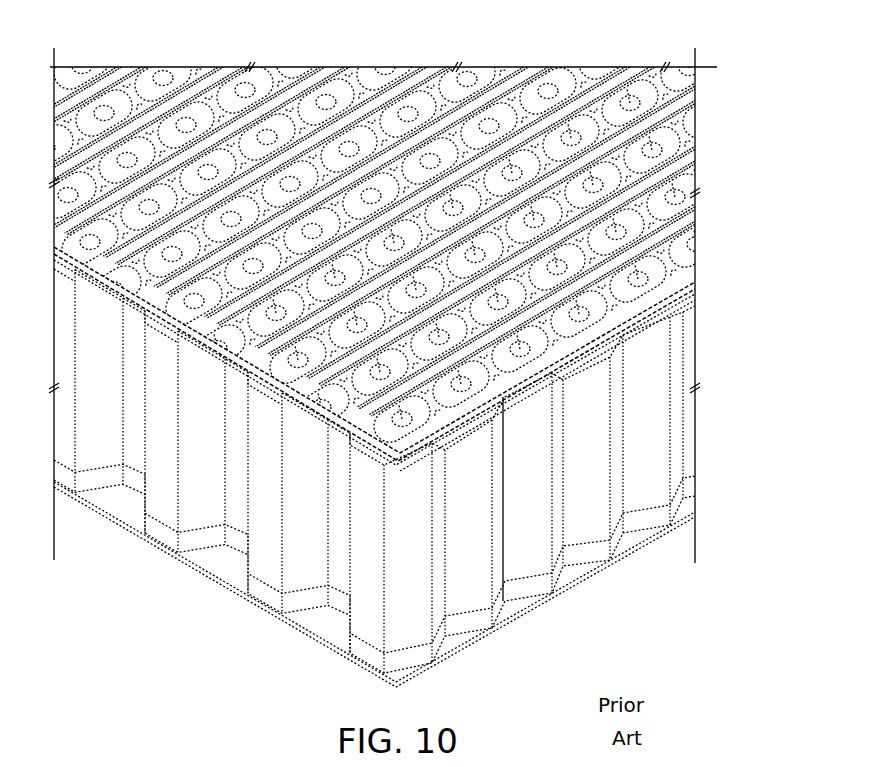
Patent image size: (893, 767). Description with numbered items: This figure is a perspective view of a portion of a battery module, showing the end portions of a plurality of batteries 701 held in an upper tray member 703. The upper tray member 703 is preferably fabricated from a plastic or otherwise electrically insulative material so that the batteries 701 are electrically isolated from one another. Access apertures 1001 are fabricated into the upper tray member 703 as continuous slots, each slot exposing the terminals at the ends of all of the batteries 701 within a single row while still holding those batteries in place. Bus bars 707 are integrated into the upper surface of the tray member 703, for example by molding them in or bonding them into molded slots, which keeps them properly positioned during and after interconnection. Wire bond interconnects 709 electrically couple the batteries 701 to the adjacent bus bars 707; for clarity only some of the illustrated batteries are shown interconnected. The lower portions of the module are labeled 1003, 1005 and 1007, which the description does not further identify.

The battery 701 is at (353, 135).
The upper tray member 703 is at (593, 337).
The bus bar 707 is at (417, 70).
The wire bond interconnect 709 is at (637, 163).
The access aperture 1001 is at (148, 242).
The honeycomb core cell wall 1003 is at (165, 537).
The cell bottom 1005 is at (265, 542).
The bottom plate 1007 is at (325, 623).